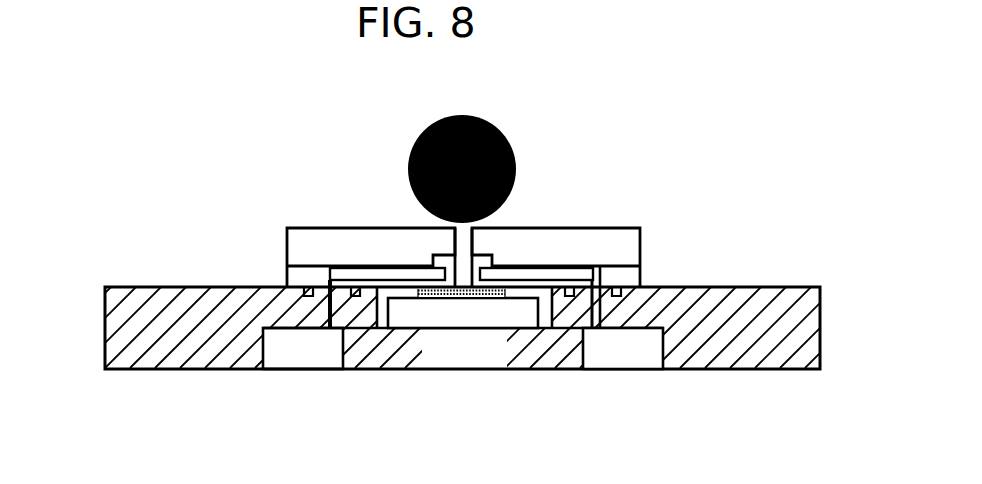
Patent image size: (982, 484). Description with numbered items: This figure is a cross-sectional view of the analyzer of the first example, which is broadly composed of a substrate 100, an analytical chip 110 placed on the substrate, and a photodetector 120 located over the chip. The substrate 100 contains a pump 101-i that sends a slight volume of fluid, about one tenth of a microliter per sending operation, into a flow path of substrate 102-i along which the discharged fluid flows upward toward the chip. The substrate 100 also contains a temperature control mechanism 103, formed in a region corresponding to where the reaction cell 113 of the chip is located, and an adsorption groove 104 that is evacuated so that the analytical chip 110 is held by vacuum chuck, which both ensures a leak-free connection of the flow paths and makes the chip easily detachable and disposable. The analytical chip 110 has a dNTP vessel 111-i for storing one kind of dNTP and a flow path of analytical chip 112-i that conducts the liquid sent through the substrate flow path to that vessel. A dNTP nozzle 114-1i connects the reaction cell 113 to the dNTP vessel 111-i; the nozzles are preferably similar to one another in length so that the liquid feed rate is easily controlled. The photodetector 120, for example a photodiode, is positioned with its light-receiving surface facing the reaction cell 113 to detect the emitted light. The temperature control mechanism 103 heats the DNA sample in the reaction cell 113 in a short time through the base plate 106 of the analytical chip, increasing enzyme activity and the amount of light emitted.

The substrate 100 is at (127, 319).
The pump 101-i is at (623, 356).
The flow path of substrate 102-i is at (600, 318).
The temperature control mechanism 103 is at (443, 318).
The adsorption groove 104 is at (303, 295).
The base plate of the analytical chip 106 is at (477, 296).
The analytical chip 110 is at (299, 245).
The dNTP vessel 111-i is at (543, 268).
The flow path of analytical chip 112-i is at (598, 272).
The reaction cell 113 is at (455, 245).
The dNTP nozzle 114-1i is at (484, 250).
The photodetector 120 is at (428, 126).